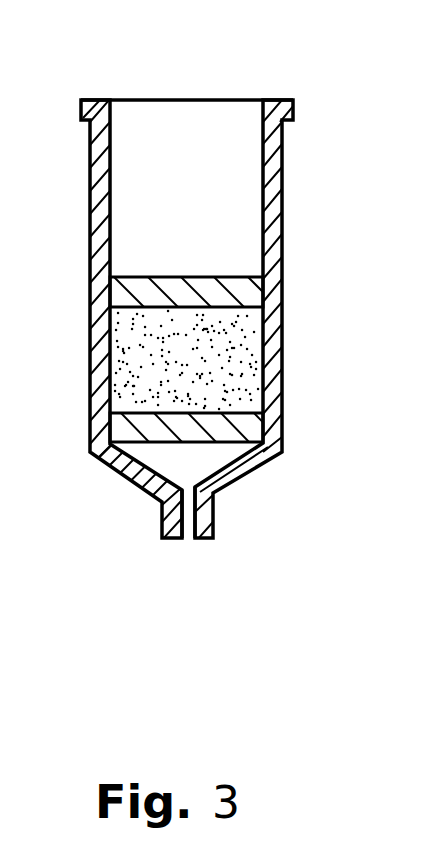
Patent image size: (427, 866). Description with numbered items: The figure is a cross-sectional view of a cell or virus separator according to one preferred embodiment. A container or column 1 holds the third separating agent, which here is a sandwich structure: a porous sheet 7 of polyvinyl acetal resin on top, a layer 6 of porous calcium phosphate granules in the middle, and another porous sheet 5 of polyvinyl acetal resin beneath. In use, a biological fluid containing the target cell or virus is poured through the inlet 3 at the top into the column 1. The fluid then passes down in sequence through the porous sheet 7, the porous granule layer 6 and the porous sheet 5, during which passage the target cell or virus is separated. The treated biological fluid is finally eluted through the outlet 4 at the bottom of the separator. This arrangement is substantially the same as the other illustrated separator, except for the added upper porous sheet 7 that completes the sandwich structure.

The container or column 1 is at (276, 202).
The inlet 3 is at (187, 100).
The outlet 4 is at (183, 537).
The porous sheet 5 is at (262, 422).
The layer of porous calcium phosphate granules 6 is at (137, 357).
The porous sheet 7 is at (260, 295).